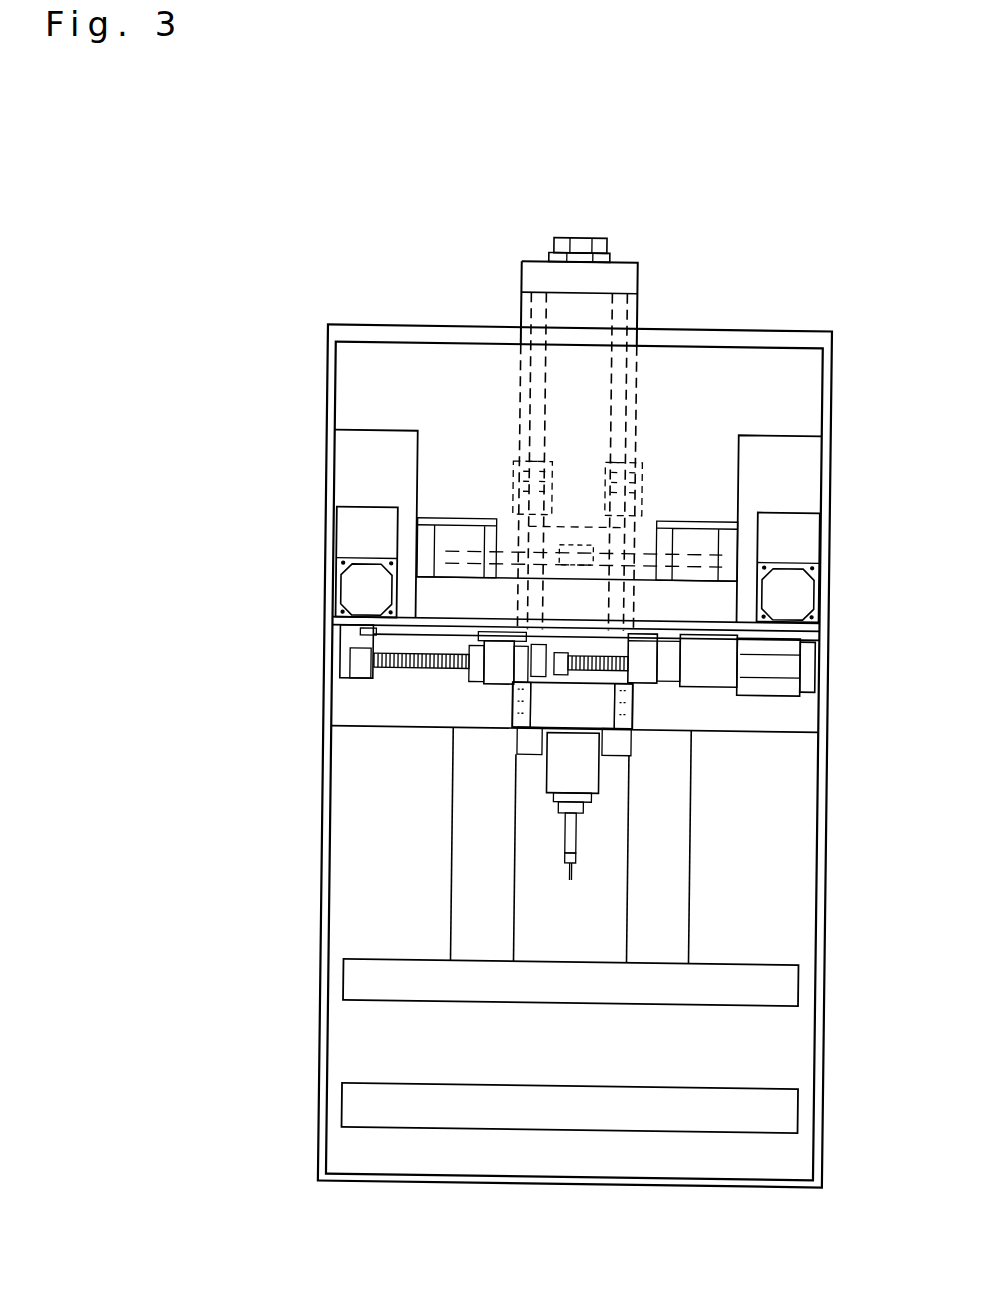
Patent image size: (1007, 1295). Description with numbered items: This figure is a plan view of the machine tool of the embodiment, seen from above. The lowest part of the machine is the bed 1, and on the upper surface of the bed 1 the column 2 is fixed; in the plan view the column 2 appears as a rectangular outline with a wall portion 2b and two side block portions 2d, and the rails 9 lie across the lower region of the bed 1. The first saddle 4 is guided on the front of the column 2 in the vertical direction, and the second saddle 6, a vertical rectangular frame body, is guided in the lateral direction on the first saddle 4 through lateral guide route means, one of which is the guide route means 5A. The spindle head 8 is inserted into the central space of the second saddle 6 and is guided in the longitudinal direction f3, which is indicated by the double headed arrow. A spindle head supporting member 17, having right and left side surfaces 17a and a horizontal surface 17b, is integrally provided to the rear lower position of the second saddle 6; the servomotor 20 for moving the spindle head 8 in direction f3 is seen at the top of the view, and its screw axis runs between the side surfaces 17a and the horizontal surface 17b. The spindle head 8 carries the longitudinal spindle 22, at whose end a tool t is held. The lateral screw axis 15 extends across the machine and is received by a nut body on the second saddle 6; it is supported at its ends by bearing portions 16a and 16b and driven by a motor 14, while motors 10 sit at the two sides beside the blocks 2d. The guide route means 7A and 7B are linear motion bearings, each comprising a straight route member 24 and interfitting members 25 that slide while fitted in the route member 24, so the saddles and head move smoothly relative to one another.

The bed 1 is at (803, 928).
The column 2 is at (792, 338).
The column housing wall 2b is at (378, 378).
The support blocks 2d is at (350, 474).
The first saddle 4 is at (333, 628).
The lateral guide route means 5A is at (372, 792).
The second saddle 6 is at (618, 700).
The guide route means 7A is at (448, 372).
The guide route means 7B is at (706, 372).
The spindle head 8 is at (540, 832).
The base rails 9 is at (570, 982).
The drive motors 10 is at (330, 592).
The feed motor 14 is at (822, 677).
The lateral screw axis 15 is at (410, 674).
The bearing coupling 16a is at (683, 684).
The end bearing 16b is at (340, 681).
The spindle head supporting member 17 is at (528, 758).
The side surfaces 17a is at (508, 495).
The horizontal surface 17b is at (576, 466).
The servomotor 20 is at (603, 246).
The spindle 22 is at (560, 820).
The straight route member 24 is at (520, 400).
The interfitting members 25 is at (525, 462).
The tool t is at (574, 882).
The longitudinal direction f3 is at (233, 1041).